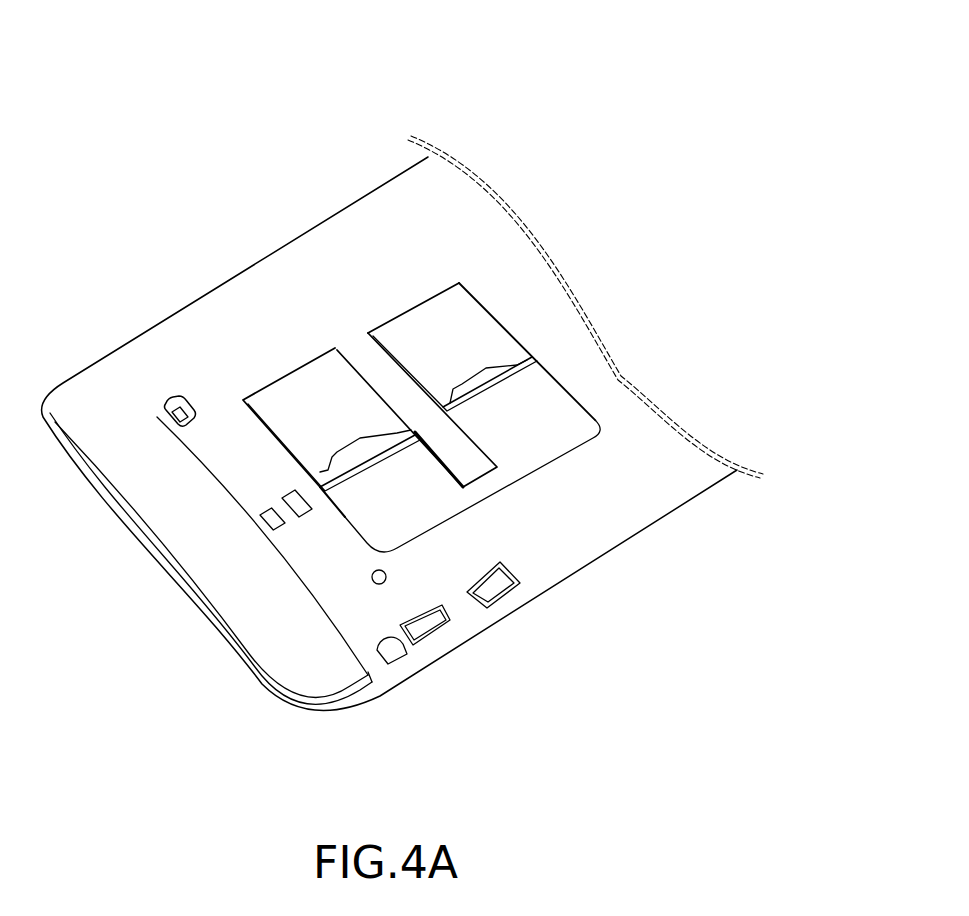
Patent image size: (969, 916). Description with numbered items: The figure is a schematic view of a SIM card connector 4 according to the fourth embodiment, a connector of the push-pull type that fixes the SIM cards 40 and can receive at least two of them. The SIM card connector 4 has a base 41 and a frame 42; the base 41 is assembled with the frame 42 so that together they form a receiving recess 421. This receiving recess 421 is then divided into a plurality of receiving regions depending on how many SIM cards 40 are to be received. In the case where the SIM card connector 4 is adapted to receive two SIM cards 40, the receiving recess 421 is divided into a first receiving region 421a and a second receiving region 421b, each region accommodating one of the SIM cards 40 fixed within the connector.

The SIM card connector 4 is at (457, 46).
The SIM card 40 is at (484, 376).
The base 41 is at (480, 386).
The frame 42 is at (480, 323).
The receiving recess 421 is at (547, 432).
The first receiving region 421a is at (428, 333).
The second receiving region 421b is at (308, 403).